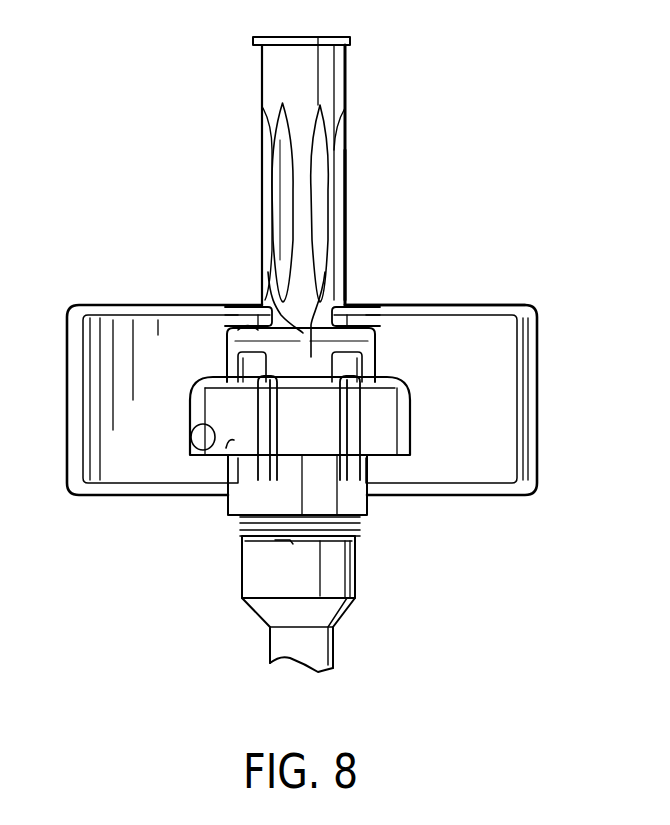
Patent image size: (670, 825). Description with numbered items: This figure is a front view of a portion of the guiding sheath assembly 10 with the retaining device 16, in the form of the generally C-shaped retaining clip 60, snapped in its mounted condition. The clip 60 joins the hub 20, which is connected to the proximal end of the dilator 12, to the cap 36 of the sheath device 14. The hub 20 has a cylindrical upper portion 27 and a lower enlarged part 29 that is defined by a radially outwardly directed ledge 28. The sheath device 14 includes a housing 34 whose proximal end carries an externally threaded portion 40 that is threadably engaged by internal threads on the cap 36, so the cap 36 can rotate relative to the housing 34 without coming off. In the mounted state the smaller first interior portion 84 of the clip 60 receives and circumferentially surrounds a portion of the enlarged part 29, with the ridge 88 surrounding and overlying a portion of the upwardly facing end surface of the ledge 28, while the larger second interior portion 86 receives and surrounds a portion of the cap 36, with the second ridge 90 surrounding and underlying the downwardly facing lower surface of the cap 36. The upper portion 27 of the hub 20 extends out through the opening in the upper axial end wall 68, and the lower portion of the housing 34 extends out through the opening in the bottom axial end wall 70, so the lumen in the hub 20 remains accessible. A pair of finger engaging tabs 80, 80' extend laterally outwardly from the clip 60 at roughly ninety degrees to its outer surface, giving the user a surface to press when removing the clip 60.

The guiding sheath assembly 10 is at (105, 573).
The upper housing / male luer portion 12 is at (360, 225).
The sheath device 14 is at (232, 614).
The retaining device 16 is at (495, 284).
The hub 20 is at (345, 100).
The cylindrical upper portion 27 is at (262, 100).
The ledge 28 is at (268, 292).
The enlarged part 29 is at (314, 302).
The housing 34 is at (360, 578).
The cap 36 is at (373, 433).
The externally threaded portion 40 is at (362, 528).
The retaining clip 60 is at (550, 478).
The upper axial end wall 68 is at (263, 306).
The bottom axial end wall 70 is at (372, 497).
The finger engaging tab 80 is at (160, 399).
The finger engaging tab 80' is at (447, 399).
The first interior portion 84 is at (371, 331).
The second interior portion 86 is at (207, 440).
The ridge 88 is at (240, 330).
The ridge 90 is at (232, 447).